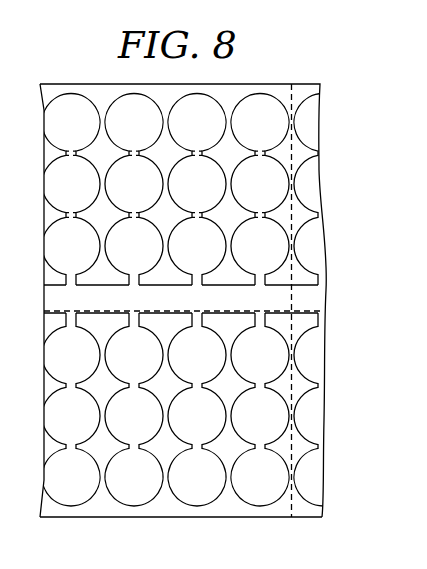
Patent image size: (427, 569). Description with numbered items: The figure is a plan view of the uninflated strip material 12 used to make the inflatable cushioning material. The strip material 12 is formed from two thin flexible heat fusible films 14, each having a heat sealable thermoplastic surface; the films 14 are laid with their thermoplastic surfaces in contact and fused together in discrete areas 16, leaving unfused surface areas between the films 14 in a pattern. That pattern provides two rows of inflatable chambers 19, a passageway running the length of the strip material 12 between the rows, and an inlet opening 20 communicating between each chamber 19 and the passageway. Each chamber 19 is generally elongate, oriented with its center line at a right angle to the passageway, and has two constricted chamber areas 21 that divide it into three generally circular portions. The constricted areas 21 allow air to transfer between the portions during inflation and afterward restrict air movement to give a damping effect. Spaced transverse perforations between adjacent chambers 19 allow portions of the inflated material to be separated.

The strip material 12 is at (54, 82).
The film 14 is at (42, 512).
The fused areas 16 is at (197, 409).
The inflatable chamber 19 is at (197, 189).
The inlet opening 20 is at (190, 299).
The constricted chamber areas 21 is at (263, 156).